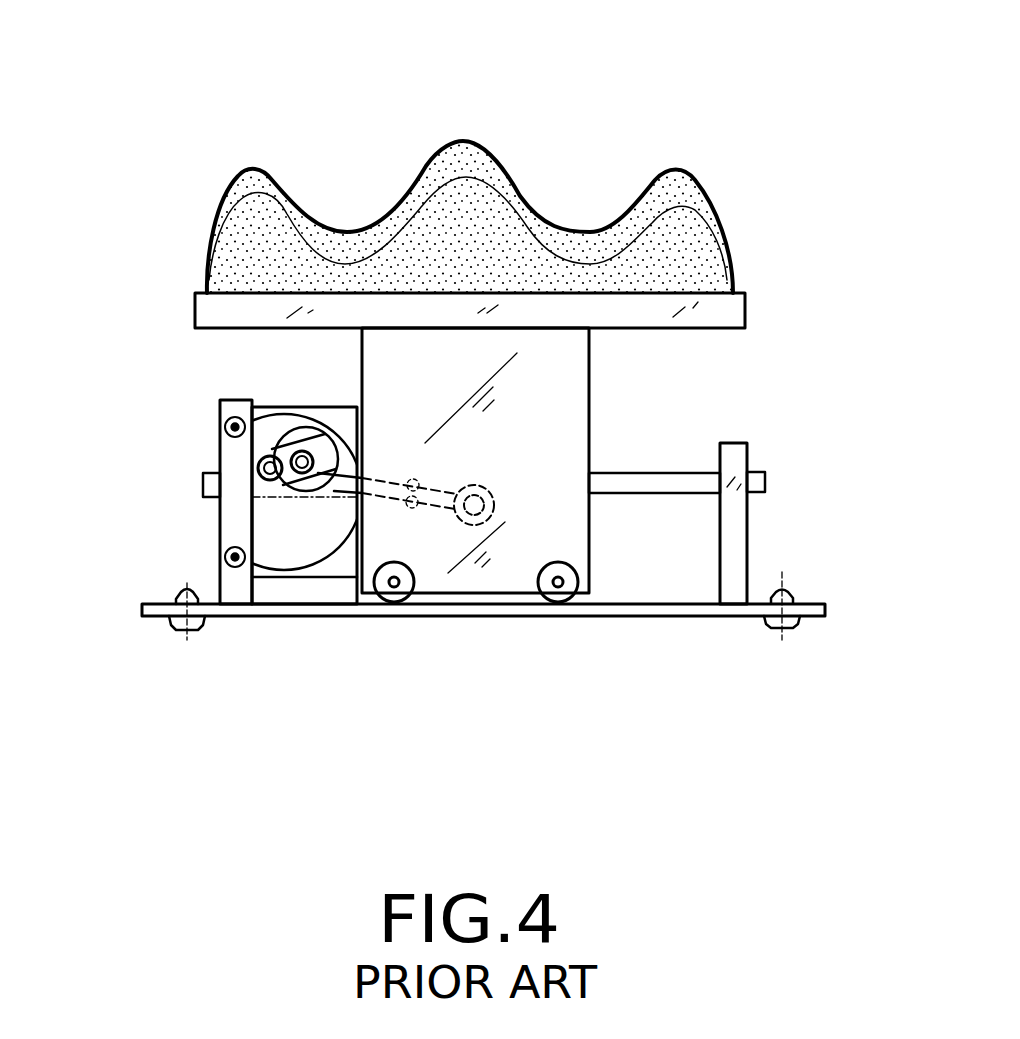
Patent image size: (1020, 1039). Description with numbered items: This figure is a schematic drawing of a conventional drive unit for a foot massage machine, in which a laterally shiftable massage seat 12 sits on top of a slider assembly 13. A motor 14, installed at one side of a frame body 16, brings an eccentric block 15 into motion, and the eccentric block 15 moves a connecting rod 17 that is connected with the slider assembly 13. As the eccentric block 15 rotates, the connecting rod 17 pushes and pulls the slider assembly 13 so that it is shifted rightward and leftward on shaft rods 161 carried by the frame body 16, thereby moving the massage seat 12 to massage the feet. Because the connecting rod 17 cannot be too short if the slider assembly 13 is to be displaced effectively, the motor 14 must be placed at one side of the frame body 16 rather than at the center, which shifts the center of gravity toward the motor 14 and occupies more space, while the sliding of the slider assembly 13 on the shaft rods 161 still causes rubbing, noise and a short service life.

The massage seat 12 is at (495, 200).
The slider assembly 13 is at (560, 385).
The motor 14 is at (300, 538).
The eccentric block 15 is at (272, 455).
The frame body 16 is at (740, 537).
The shaft rods 161 is at (640, 480).
The connecting rod 17 is at (447, 497).